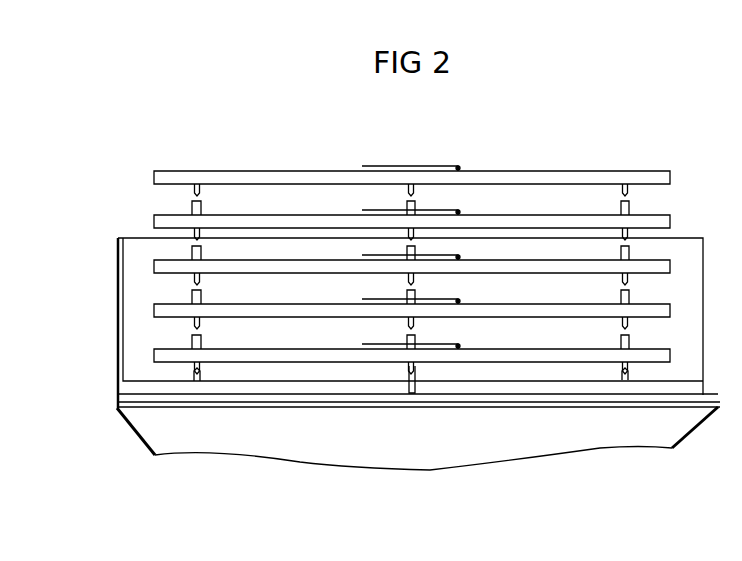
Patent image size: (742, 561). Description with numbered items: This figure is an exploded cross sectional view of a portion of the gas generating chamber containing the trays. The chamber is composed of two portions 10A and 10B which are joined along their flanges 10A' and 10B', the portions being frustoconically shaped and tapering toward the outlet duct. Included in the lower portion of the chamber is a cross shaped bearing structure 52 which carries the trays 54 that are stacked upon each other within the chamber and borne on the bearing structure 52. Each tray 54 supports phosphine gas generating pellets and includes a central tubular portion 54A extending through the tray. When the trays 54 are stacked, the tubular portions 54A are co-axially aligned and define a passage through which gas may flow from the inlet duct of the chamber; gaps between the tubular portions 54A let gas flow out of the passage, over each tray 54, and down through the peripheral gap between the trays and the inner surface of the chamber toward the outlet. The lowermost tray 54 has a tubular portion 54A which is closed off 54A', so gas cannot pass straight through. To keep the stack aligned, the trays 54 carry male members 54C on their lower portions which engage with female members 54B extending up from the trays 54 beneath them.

The upper chamber portion 10A is at (370, 304).
The flange of the upper chamber portion 10A' is at (375, 380).
The lower chamber portion 10B is at (436, 452).
The flange of the lower chamber portion 10B' is at (102, 448).
The cross shaped bearing structure 52 is at (502, 357).
The trays 54 is at (625, 352).
The central tubular portion 54A is at (441, 247).
The closed-off tubular portion 54A' is at (435, 426).
The female members 54B is at (176, 203).
The male members 54C is at (197, 371).